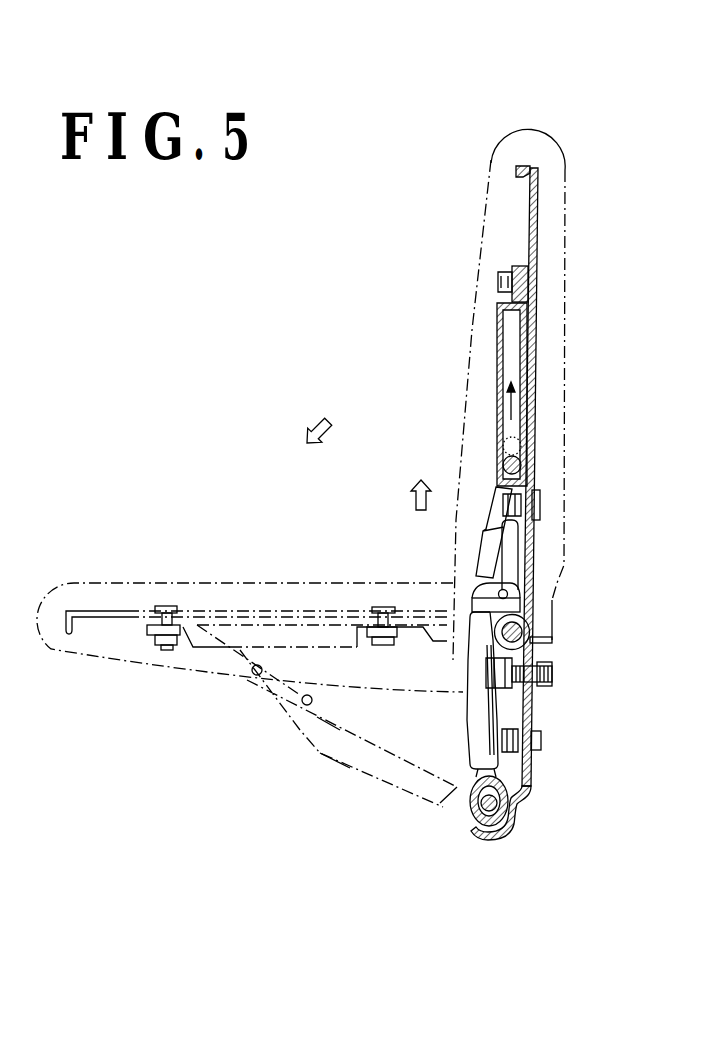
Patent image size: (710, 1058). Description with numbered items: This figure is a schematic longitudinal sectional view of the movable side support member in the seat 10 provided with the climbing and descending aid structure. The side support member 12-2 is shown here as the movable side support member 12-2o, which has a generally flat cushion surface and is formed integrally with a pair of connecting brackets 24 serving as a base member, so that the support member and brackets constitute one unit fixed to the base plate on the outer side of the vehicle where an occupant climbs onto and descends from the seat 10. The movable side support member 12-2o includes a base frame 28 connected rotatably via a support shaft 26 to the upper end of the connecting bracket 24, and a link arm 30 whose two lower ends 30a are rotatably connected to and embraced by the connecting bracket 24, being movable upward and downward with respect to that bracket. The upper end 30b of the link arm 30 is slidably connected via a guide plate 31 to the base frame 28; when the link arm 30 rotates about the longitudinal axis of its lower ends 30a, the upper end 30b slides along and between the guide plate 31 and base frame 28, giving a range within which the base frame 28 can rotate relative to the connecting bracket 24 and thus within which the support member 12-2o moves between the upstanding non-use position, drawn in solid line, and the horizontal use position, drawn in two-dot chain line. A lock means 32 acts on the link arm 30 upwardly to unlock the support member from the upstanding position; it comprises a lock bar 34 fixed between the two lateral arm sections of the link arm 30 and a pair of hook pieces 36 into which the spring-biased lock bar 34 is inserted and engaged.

The seat 10 is at (430, 146).
The seat back 12-2 is at (480, 252).
The movable side support member 12-2o is at (444, 405).
The connecting bracket 24 is at (520, 793).
The support shaft 26 is at (530, 637).
The base frame 28 is at (536, 353).
The link arm 30 is at (467, 712).
The lower ends of link arm 30a is at (486, 834).
The upper end of link arm 30b is at (498, 467).
The guide plate 31 is at (497, 363).
The lock means 32 is at (483, 580).
The lock bar 34 is at (518, 600).
The hook pieces 36 is at (483, 612).